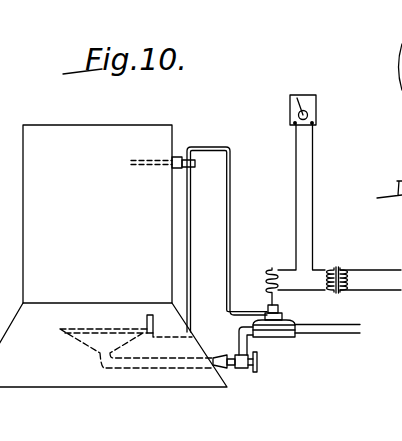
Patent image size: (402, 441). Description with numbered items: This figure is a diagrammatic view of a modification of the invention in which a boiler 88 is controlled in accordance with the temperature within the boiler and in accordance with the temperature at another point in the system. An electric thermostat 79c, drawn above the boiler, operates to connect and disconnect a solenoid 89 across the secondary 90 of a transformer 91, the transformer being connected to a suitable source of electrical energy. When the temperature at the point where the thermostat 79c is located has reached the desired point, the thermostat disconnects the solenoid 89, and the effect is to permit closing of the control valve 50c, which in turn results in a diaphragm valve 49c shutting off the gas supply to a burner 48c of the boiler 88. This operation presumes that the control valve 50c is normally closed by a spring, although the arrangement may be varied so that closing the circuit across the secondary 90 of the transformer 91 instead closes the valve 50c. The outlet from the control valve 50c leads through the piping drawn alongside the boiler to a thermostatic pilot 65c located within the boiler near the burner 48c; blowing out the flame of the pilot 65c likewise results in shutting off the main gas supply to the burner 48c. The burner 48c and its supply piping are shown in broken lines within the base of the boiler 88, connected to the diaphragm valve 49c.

The boiler 88 is at (113, 256).
The thermostatic pilot 65c is at (147, 315).
The burner 48c is at (58, 332).
The electric thermostat 79c is at (313, 93).
The solenoid 89 is at (268, 272).
The secondary 90 is at (325, 280).
The transformer 91 is at (341, 268).
The control valve 50c is at (279, 316).
The diaphragm valve 49c is at (283, 334).